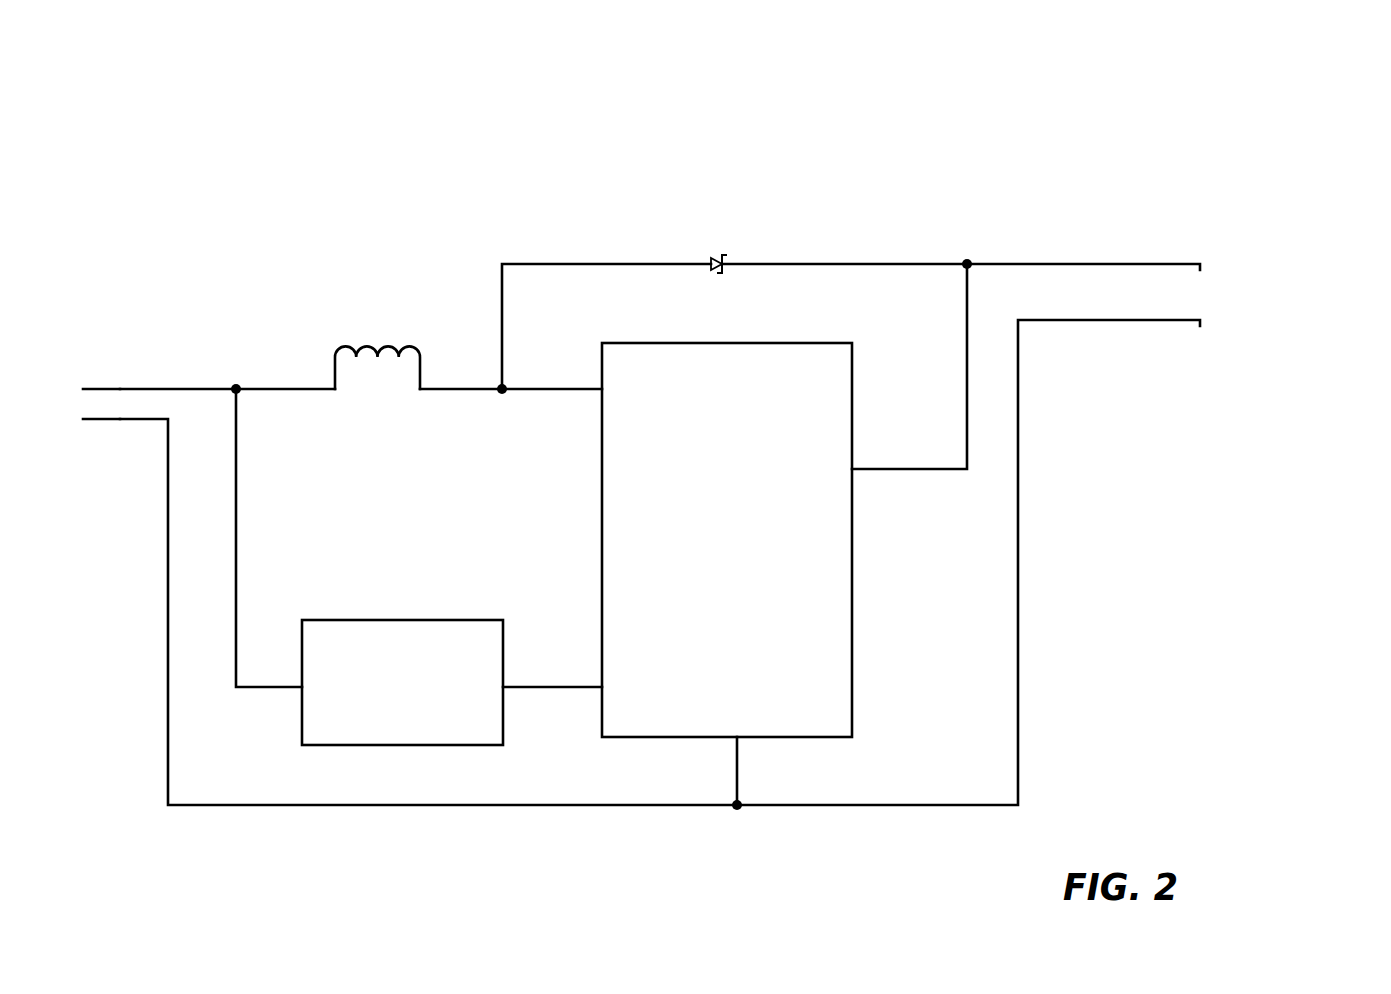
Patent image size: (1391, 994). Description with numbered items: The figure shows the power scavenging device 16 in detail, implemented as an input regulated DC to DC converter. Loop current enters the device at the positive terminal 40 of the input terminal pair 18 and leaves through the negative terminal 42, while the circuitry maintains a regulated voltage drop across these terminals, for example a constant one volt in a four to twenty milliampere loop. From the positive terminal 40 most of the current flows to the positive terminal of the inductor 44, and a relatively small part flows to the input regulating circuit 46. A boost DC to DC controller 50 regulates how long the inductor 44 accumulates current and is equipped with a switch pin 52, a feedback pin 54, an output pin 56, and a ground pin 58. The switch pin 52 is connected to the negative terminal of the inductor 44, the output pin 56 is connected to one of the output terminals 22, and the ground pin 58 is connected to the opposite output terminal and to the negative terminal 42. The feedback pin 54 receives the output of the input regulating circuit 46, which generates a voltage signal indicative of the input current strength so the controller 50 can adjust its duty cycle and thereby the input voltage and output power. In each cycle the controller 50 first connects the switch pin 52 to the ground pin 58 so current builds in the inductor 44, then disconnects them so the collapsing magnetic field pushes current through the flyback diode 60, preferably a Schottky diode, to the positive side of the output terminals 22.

The power scavenging device 16 is at (1295, 153).
The input terminals 18 is at (67, 347).
The output terminals 22 is at (1248, 268).
The positive terminal 40 is at (118, 388).
The negative terminal 42 is at (137, 420).
The inductor 44 is at (327, 353).
The input regulating circuit 46 is at (400, 619).
The boost DC to DC controller 50 is at (753, 343).
The switch pin 52 is at (635, 370).
The feedback pin 54 is at (618, 687).
The output pin 56 is at (852, 460).
The ground pin 58 is at (785, 723).
The flyback diode 60 is at (703, 256).